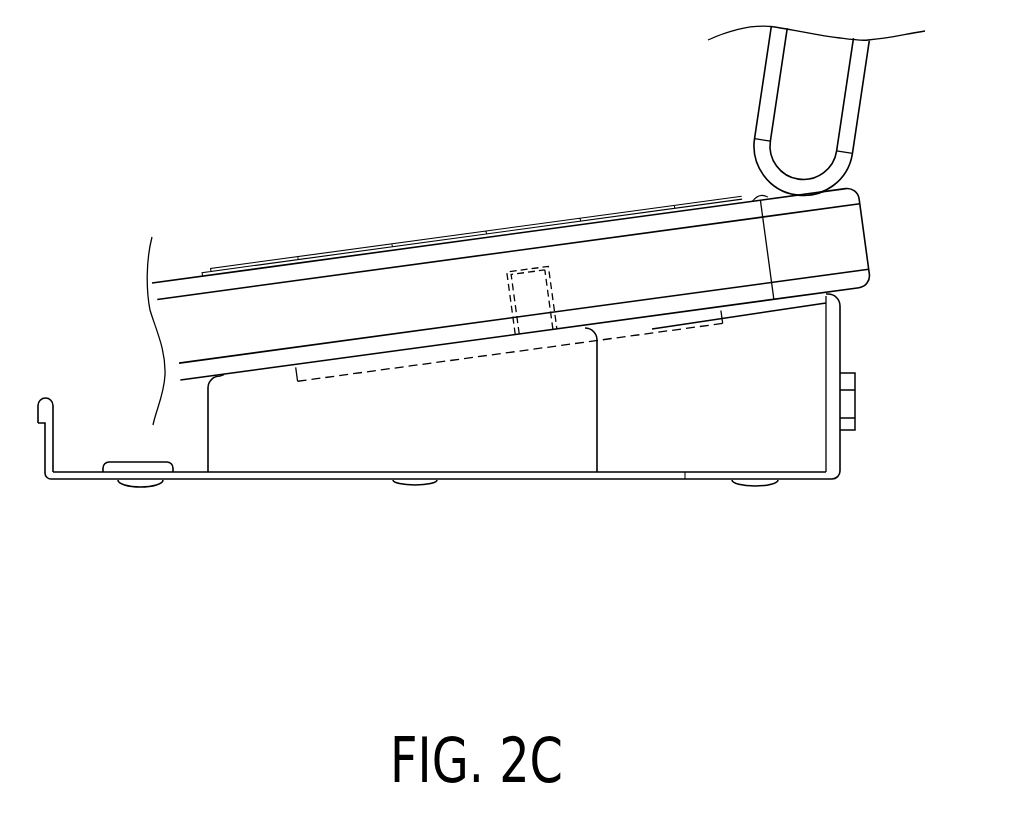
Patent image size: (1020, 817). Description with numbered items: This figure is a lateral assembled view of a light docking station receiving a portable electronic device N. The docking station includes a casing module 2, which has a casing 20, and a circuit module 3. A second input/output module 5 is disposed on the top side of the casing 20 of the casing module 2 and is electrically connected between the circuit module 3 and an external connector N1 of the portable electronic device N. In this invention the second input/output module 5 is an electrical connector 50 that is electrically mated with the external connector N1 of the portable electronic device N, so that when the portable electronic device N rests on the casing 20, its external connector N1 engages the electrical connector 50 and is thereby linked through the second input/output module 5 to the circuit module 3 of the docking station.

The portable electronic device N is at (246, 290).
The external connector N1 is at (505, 262).
The second input/output module 5 is at (506, 292).
The electrical connector 50 is at (549, 277).
The circuit module 3 is at (649, 318).
The casing module 2 is at (800, 334).
The casing 20 is at (785, 410).